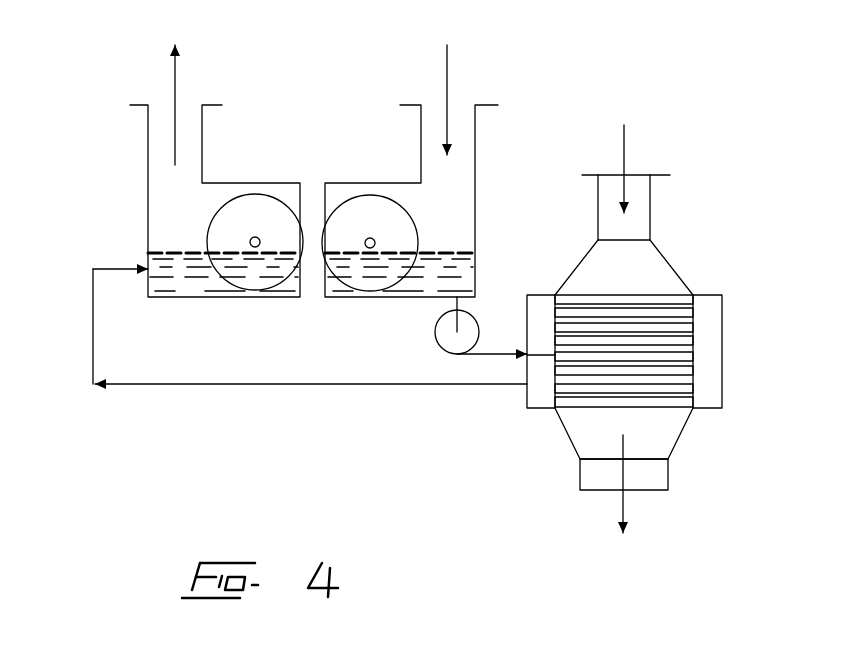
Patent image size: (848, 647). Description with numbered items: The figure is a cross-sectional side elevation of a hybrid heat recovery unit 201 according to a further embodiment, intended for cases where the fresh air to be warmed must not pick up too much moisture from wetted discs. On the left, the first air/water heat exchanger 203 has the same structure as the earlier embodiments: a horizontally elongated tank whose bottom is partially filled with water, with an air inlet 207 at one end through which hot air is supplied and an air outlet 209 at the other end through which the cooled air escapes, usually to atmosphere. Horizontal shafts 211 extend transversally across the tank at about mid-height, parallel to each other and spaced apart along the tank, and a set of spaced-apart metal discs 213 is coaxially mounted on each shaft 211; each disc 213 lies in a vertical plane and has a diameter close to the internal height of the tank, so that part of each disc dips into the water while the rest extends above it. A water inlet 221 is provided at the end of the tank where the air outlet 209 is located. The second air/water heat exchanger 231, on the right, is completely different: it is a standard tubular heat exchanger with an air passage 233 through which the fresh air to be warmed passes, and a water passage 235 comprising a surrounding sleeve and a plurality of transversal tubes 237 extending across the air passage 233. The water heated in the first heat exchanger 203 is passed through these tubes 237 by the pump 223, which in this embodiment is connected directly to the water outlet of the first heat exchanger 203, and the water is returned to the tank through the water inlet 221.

The heat recovery unit 201 is at (197, 411).
The first air/water heat exchanger 203 is at (148, 178).
The air inlet 207 is at (457, 108).
The air outlet 209 is at (187, 102).
The horizontal shafts 211 is at (364, 239).
The metal discs 213 is at (355, 280).
The water inlet 221 is at (93, 340).
The water pump 223 is at (438, 345).
The second air/water heat exchanger 231 is at (681, 270).
The air passage 233 is at (638, 267).
The water passage 235 is at (707, 328).
The transversal tubes 237 is at (637, 383).